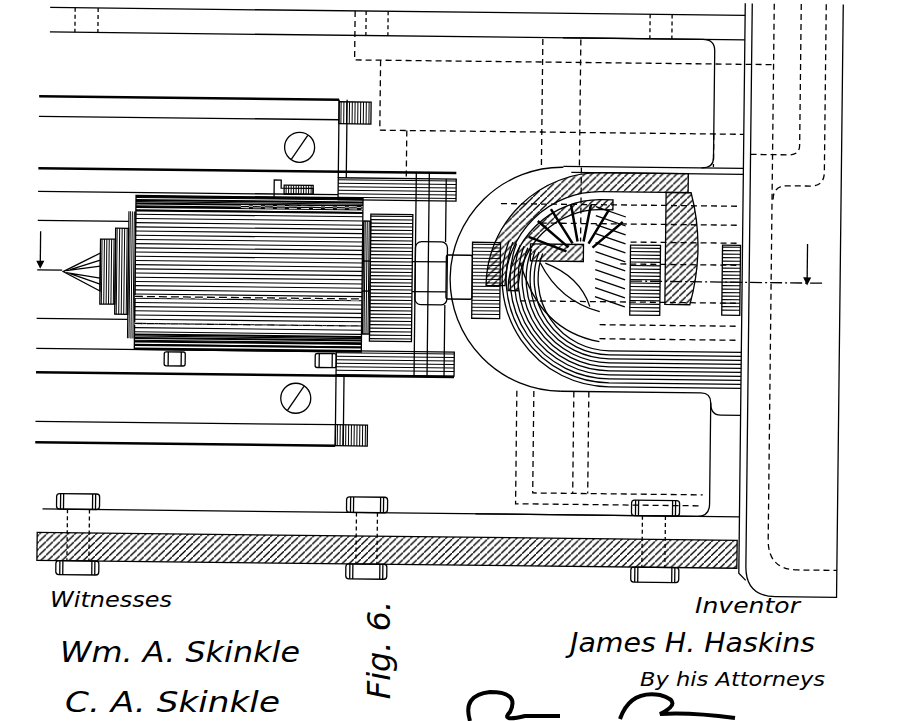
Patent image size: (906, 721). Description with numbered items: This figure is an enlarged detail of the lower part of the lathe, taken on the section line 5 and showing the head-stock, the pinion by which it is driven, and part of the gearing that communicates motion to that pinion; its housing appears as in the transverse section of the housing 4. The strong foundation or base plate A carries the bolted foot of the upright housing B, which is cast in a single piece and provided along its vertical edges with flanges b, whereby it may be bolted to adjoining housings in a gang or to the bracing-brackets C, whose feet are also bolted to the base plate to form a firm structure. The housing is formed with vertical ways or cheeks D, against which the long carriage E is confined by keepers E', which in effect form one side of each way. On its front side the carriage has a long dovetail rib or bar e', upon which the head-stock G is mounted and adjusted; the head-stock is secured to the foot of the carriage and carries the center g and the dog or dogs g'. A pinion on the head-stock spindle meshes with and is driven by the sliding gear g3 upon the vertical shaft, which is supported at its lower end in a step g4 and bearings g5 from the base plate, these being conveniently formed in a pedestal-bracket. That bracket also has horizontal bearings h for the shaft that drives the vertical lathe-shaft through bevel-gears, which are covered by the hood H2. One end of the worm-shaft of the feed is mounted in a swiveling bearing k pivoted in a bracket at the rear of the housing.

The base plate A is at (791, 300).
The upright housing B is at (393, 261).
The flanges b is at (414, 296).
The bracing-brackets C is at (387, 550).
The vertical ways D is at (476, 180).
The carriage E is at (187, 271).
The keepers E' is at (246, 271).
The head-stock G is at (245, 281).
The center g is at (262, 277).
The dogs g' is at (101, 271).
The sliding gear g3 is at (387, 278).
The step g4 is at (722, 288).
The bearings g5 is at (486, 280).
The dovetail rib e' is at (72, 261).
The hood H2 is at (641, 172).
The horizontal bearings h is at (622, 296).
The swiveling bearing k is at (429, 231).
The pin 4 is at (267, 188).
The section line 5 is at (428, 264).